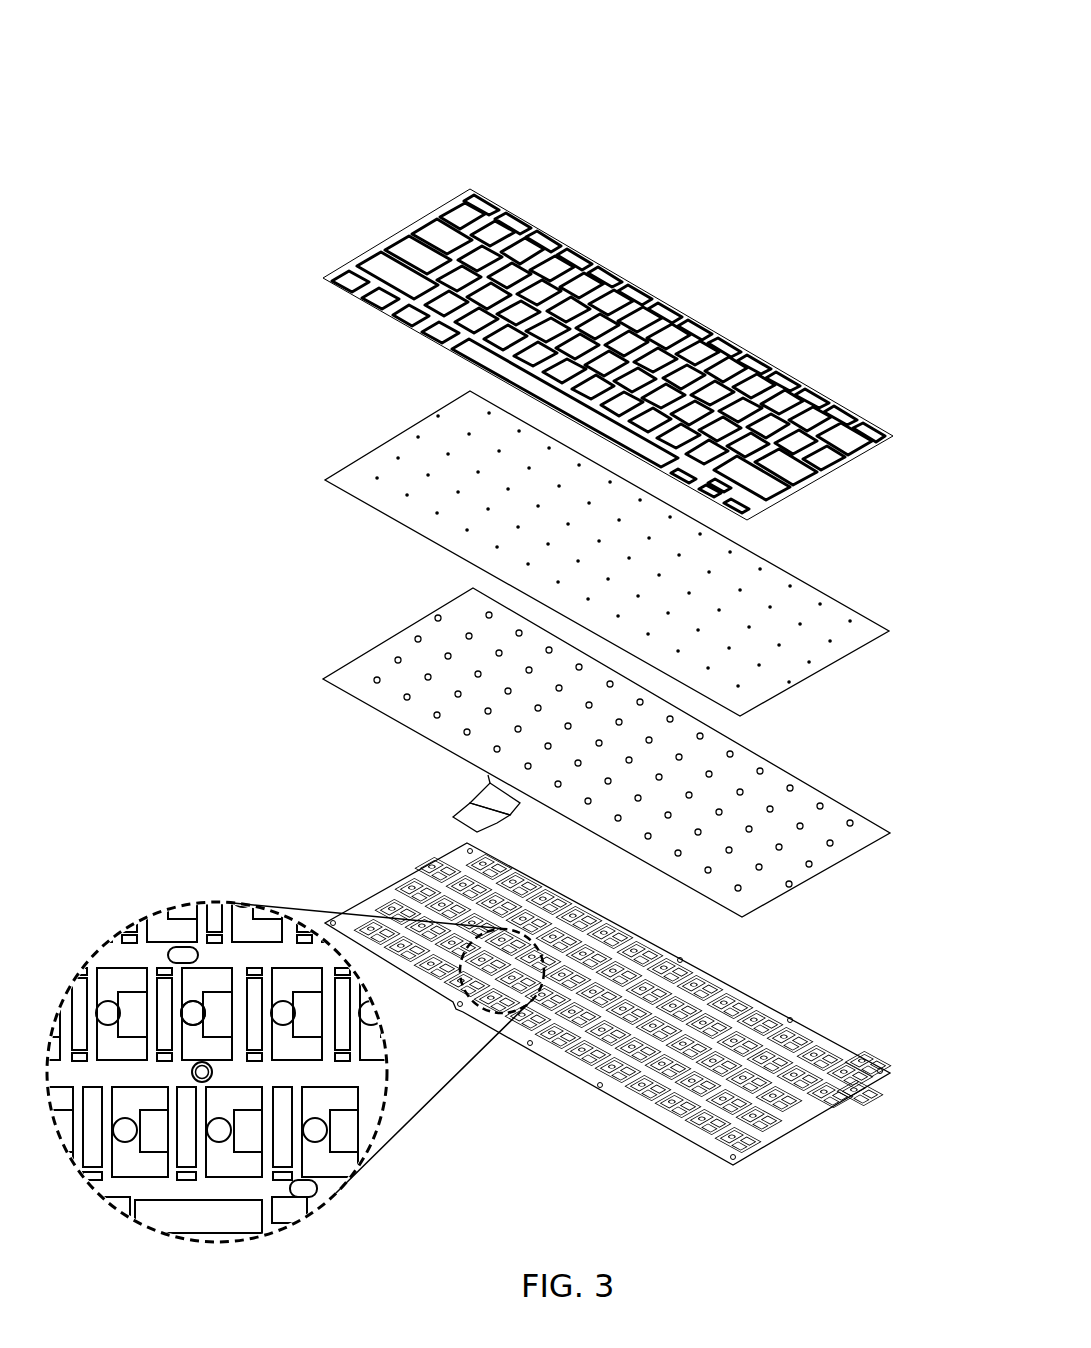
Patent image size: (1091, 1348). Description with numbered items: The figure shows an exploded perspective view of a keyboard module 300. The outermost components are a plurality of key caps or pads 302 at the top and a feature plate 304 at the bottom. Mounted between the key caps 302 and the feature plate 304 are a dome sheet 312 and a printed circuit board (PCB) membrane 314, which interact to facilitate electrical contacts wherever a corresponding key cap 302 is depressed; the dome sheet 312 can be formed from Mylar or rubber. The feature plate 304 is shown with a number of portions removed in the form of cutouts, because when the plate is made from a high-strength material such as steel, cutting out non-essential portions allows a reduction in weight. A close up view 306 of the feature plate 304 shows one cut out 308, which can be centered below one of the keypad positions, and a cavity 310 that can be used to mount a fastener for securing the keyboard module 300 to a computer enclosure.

The keyboard module 300 is at (242, 62).
The key caps 302 is at (322, 270).
The dome sheet 312 is at (325, 480).
The printed circuit board membrane 314 is at (323, 679).
The feature plate 304 is at (325, 920).
The close up view 306 is at (387, 1073).
The cut out 308 is at (185, 1000).
The cavity 310 is at (223, 1079).